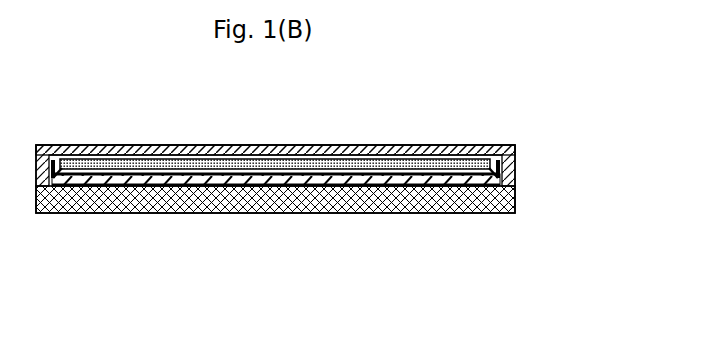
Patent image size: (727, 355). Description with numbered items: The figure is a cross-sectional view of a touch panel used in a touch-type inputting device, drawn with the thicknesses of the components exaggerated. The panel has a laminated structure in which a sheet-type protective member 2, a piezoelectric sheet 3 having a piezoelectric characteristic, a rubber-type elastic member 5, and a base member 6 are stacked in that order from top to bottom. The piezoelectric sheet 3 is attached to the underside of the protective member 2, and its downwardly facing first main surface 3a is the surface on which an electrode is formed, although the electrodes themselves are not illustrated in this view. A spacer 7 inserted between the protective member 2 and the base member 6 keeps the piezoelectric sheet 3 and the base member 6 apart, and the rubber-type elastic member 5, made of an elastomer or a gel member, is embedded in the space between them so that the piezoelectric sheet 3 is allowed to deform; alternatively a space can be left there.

The sheet-type protective member 2 is at (388, 147).
The piezoelectric sheet 3 is at (189, 160).
The first main surface 3a is at (310, 174).
The rubber-type elastic member 5 is at (84, 155).
The base member 6 is at (177, 203).
The spacer 7 is at (516, 172).